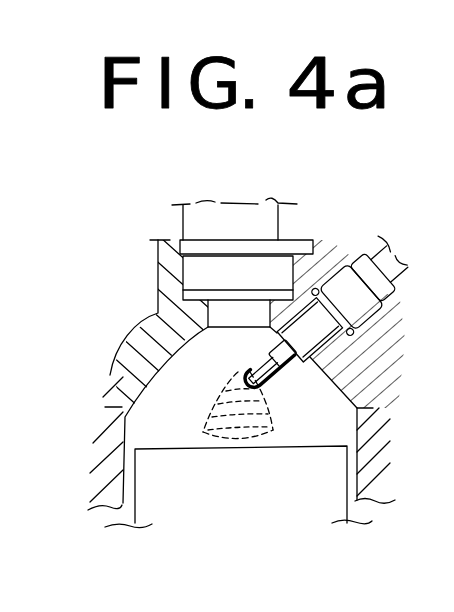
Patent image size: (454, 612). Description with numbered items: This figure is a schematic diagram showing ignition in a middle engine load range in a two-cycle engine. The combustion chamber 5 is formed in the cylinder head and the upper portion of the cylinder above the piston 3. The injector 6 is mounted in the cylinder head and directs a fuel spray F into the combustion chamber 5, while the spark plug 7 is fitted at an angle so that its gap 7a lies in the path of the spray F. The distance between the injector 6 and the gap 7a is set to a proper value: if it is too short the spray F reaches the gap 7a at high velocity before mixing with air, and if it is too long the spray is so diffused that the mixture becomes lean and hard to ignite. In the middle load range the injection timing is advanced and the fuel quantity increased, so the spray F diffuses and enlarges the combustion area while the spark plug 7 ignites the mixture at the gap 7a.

The piston 3 is at (251, 458).
The combustion chamber 5 is at (193, 363).
The injector 6 is at (265, 213).
The spark plug 7 is at (392, 315).
The gap 7a is at (268, 386).
The fuel spray F is at (260, 405).